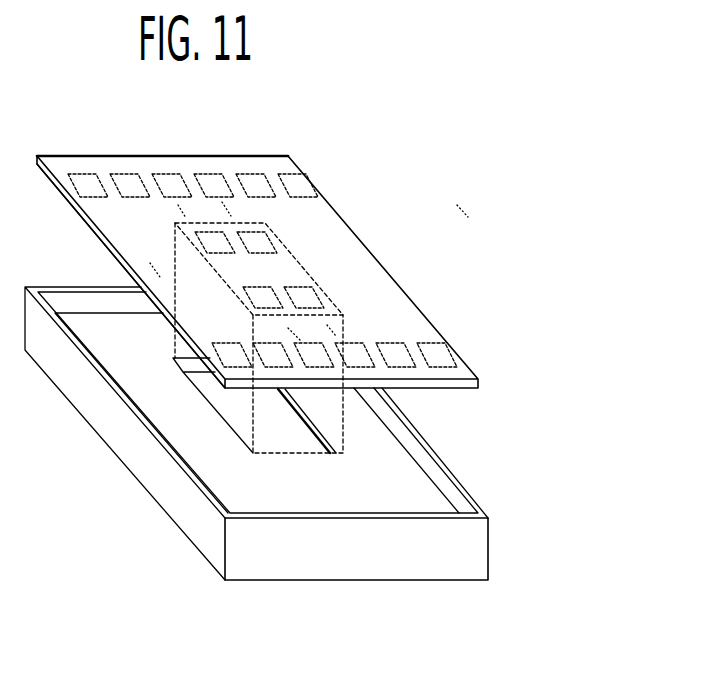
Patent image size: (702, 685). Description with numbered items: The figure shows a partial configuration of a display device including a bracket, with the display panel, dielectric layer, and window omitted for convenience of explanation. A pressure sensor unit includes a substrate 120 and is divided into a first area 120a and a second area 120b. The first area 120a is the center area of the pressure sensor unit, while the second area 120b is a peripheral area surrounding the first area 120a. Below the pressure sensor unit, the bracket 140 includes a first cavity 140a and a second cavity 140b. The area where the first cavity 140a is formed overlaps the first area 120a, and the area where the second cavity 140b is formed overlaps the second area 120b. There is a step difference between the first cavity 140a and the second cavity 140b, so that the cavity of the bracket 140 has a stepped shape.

The substrate 120 is at (322, 191).
The first area 120a is at (290, 265).
The second area 120b is at (404, 310).
The bracket 140 is at (490, 548).
The first cavity 140a is at (303, 440).
The second cavity 140b is at (236, 494).